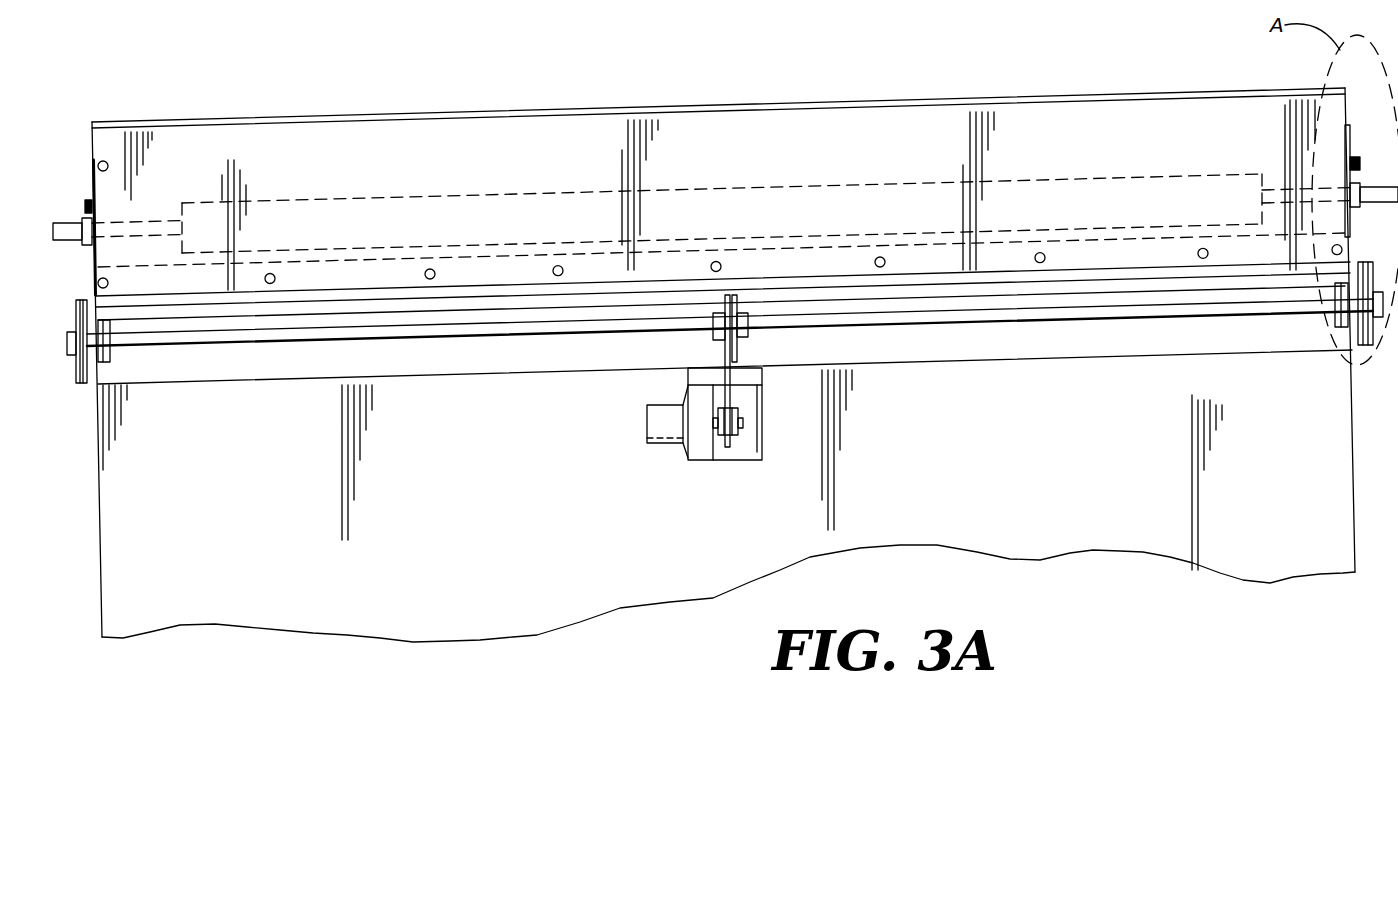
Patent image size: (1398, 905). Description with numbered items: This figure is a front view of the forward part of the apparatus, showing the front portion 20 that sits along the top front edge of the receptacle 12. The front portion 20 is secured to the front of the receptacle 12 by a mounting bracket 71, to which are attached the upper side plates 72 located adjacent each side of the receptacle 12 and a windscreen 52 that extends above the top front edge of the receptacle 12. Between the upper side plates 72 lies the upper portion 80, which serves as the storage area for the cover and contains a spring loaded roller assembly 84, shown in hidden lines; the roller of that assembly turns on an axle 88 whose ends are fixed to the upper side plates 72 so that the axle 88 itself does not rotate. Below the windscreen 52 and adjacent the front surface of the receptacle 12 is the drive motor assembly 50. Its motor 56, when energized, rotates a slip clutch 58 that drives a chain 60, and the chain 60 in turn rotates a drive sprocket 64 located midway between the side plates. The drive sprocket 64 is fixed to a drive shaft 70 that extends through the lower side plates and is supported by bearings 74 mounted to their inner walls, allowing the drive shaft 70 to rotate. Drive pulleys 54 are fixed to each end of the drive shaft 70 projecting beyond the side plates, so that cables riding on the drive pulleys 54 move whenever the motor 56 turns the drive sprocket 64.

The receptacle 12 is at (1052, 417).
The front portion 20 is at (848, 38).
The drive motor assembly 50 is at (763, 480).
The windscreen 52 is at (145, 122).
The drive pulleys 54 is at (80, 384).
The motor 56 is at (662, 455).
The slip clutch 58 is at (738, 440).
The chain 60 is at (733, 378).
The drive sprocket 64 is at (710, 338).
The drive shaft 70 is at (648, 323).
The mounting bracket 71 is at (890, 345).
The upper side plates 72 is at (110, 283).
The bearings 74 is at (110, 356).
The upper portion 80 is at (472, 146).
The spring loaded roller assembly 84 is at (668, 188).
The axle 88 is at (75, 220).